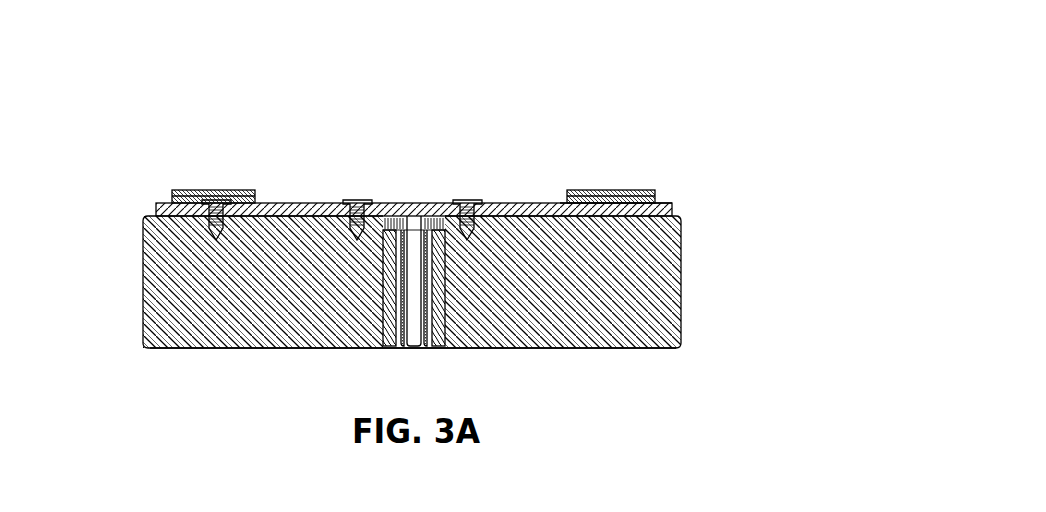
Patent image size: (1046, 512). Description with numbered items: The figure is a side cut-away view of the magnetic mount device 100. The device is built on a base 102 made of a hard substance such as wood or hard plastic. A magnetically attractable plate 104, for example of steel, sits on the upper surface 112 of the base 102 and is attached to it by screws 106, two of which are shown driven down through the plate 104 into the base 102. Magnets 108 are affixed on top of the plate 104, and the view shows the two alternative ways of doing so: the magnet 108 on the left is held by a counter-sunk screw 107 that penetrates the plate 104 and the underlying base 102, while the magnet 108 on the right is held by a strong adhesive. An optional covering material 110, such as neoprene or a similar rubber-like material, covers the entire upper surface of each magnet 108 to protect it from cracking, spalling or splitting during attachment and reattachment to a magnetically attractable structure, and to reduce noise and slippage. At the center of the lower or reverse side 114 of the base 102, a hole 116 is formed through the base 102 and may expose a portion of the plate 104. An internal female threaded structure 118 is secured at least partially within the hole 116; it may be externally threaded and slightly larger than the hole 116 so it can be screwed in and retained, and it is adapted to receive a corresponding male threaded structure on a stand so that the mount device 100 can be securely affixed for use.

The magnetic mount device 100 is at (629, 100).
The base 102 is at (268, 309).
The plate 104 is at (673, 207).
The screws 106 is at (356, 200).
The counter-sunk screws 107 is at (210, 203).
The magnets 108 is at (650, 203).
The covering material 110 is at (655, 200).
The upper surface 112 is at (150, 214).
The lower or reverse side 114 is at (210, 349).
The hole 116 is at (438, 330).
The female threaded structure 118 is at (418, 325).